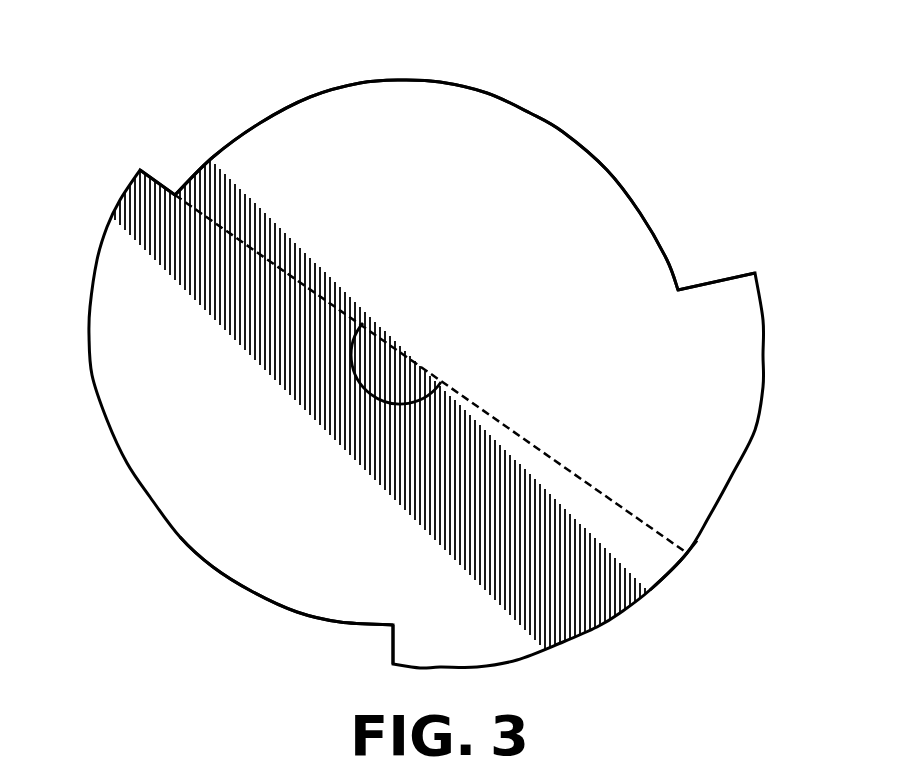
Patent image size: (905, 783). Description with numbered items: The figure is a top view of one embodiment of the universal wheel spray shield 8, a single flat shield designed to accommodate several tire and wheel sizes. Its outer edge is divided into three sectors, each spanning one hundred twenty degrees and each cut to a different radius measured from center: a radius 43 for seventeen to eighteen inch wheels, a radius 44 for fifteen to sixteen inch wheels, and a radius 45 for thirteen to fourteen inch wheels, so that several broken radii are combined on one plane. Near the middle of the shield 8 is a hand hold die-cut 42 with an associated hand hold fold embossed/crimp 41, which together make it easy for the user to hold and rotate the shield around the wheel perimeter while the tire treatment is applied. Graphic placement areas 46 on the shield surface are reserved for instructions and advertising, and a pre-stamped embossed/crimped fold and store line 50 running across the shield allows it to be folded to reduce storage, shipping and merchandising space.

The wheel spray shield 8 is at (252, 540).
The hand hold fold embossed/crimp 41 is at (413, 358).
The hand hold die-cut 42 is at (437, 390).
The 120 degree radius for 17-18 inch wheels 43 is at (755, 430).
The 120 degree radius for 15-16 inch wheels 44 is at (90, 346).
The 120 degree radius for 13-14 inch wheels 45 is at (487, 92).
The graphic placement areas 46 is at (414, 193).
The pre-stamped embossed/crimped fold and store line 50 is at (687, 553).